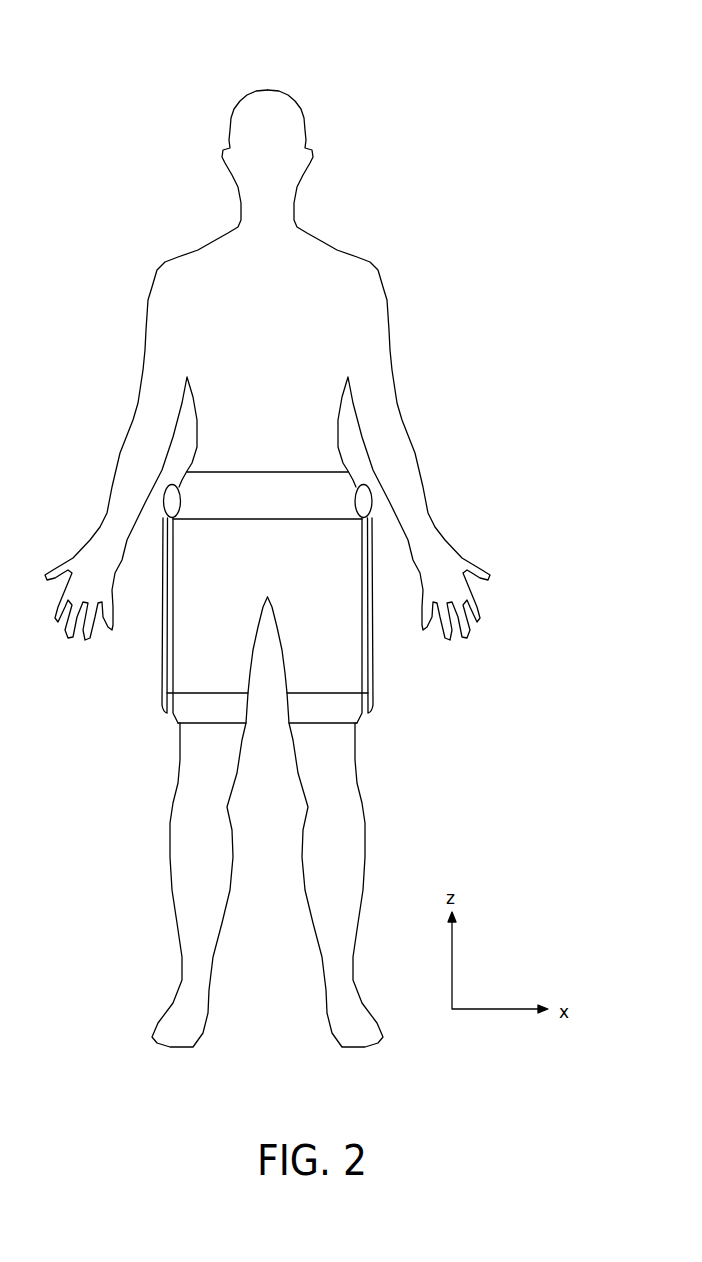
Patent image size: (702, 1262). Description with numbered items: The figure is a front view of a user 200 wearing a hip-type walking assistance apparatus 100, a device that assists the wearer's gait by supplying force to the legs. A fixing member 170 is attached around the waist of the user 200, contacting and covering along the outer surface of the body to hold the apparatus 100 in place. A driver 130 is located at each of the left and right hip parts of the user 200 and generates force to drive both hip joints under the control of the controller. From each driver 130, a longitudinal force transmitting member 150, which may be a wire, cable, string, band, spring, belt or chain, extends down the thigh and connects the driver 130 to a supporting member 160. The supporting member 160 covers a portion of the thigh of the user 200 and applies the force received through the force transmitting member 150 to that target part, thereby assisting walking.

The walking assistance apparatus 100 is at (290, 39).
The user 200 is at (338, 252).
The fixing member 170 is at (313, 478).
The driver 130 is at (367, 499).
The force transmitting member 150 is at (374, 568).
The supporting member 160 is at (332, 717).